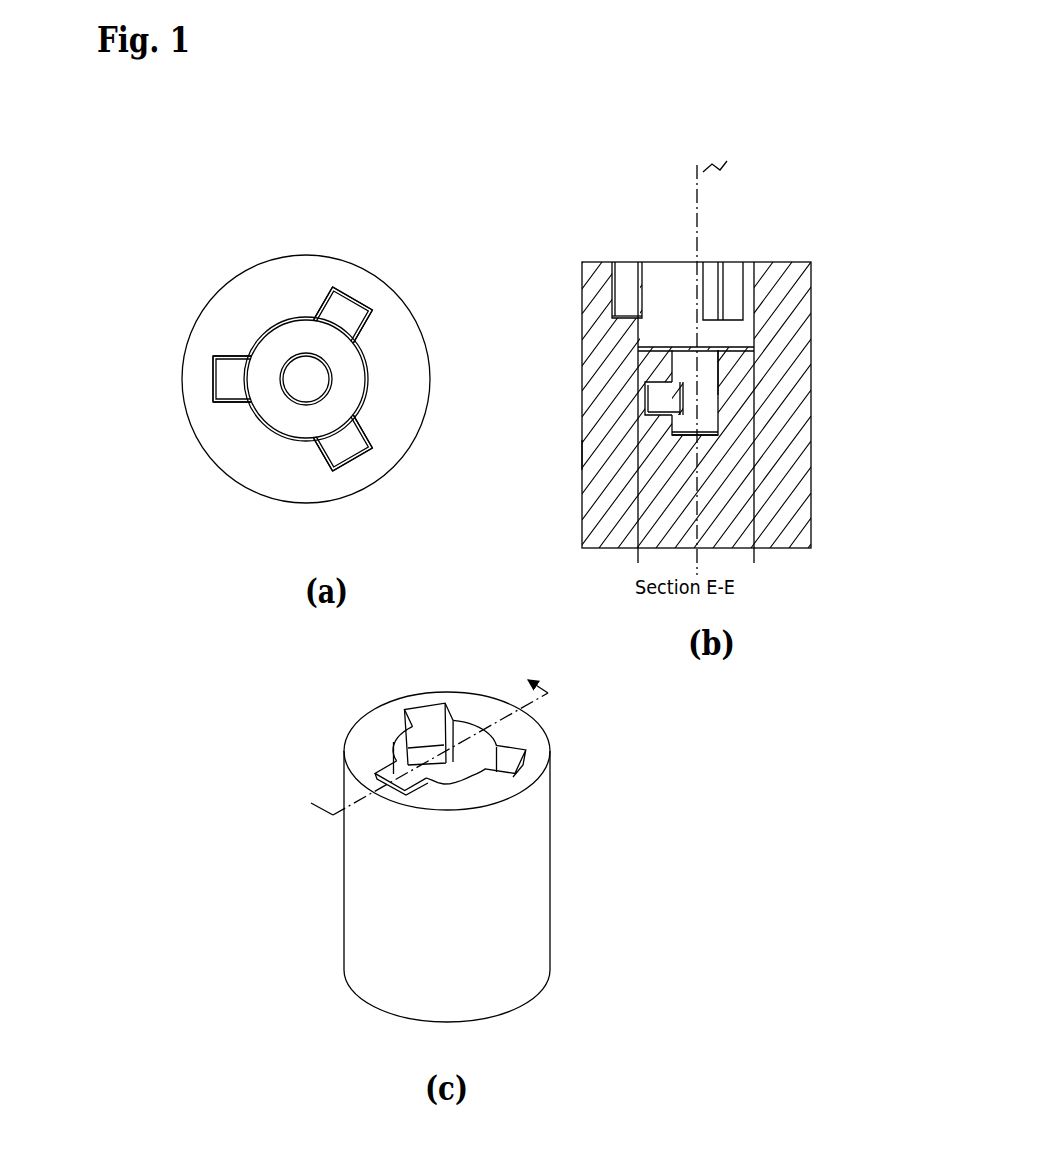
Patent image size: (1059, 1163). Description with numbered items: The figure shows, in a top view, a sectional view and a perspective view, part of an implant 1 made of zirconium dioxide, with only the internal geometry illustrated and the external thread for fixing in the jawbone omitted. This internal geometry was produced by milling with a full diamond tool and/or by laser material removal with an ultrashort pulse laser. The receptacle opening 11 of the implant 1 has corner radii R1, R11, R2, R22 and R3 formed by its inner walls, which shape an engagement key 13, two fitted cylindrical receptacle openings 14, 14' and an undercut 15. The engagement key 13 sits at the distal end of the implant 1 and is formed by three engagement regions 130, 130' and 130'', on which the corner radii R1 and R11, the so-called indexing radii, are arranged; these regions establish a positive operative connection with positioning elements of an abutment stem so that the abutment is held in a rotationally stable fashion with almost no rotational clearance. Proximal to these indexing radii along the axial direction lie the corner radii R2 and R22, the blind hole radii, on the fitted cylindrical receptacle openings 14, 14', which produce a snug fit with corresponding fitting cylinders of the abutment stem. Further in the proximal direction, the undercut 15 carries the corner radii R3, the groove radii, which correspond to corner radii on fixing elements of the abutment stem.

The implant 1 is at (588, 215).
The receptacle opening 11 is at (699, 258).
The engagement key 13 is at (643, 790).
The fitted cylindrical receptacle opening 14 is at (564, 523).
The fitted cylindrical receptacle opening 14' is at (767, 397).
The undercut 15 is at (584, 470).
The engagement region 130 is at (403, 524).
The engagement region 130' is at (481, 638).
The engagement region 130'' is at (342, 528).
The corner radius R1 is at (335, 288).
The corner radius R11 is at (248, 348).
The corner radius R2 is at (723, 393).
The corner radius R22 is at (735, 433).
The corner radius R3 is at (643, 411).